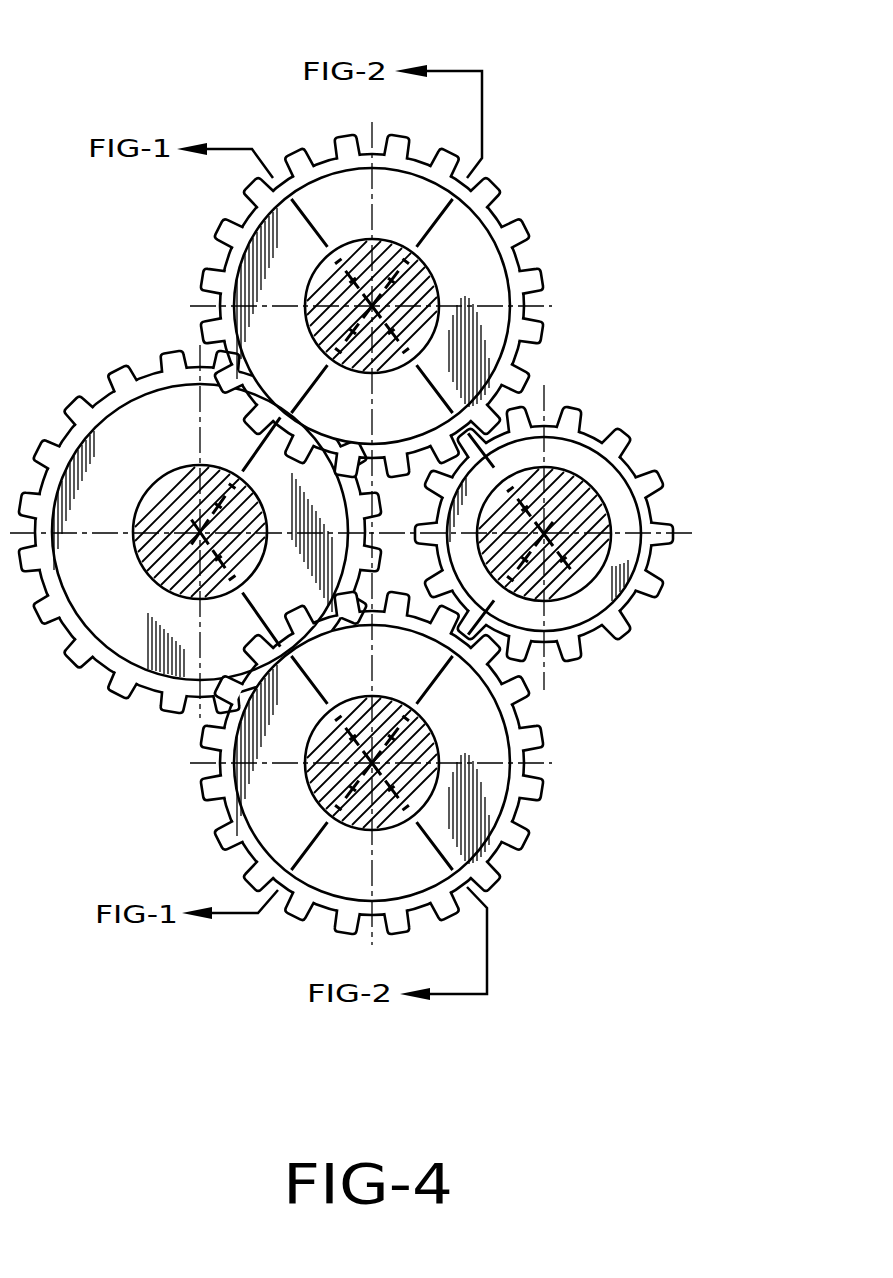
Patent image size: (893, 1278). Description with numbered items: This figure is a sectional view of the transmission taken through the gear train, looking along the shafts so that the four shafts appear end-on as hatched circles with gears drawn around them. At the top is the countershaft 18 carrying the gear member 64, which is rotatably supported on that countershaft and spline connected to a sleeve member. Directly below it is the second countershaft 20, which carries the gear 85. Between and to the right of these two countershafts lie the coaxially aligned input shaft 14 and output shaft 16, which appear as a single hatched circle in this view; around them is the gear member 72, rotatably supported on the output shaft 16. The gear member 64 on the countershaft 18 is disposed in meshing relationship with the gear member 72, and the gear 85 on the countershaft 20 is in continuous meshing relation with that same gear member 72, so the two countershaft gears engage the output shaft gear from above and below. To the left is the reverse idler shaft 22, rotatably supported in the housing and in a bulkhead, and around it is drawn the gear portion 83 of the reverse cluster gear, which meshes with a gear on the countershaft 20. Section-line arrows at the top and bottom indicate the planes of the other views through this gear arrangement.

The input shaft 14 is at (595, 510).
The output shaft 16 is at (573, 505).
The countershaft 18 is at (318, 347).
The countershaft 20 is at (322, 802).
The reverse idler shaft 22 is at (188, 488).
The gear member 64 is at (394, 305).
The gear member 72 is at (570, 523).
The gear portion 83 is at (199, 508).
The gear 85 is at (400, 762).